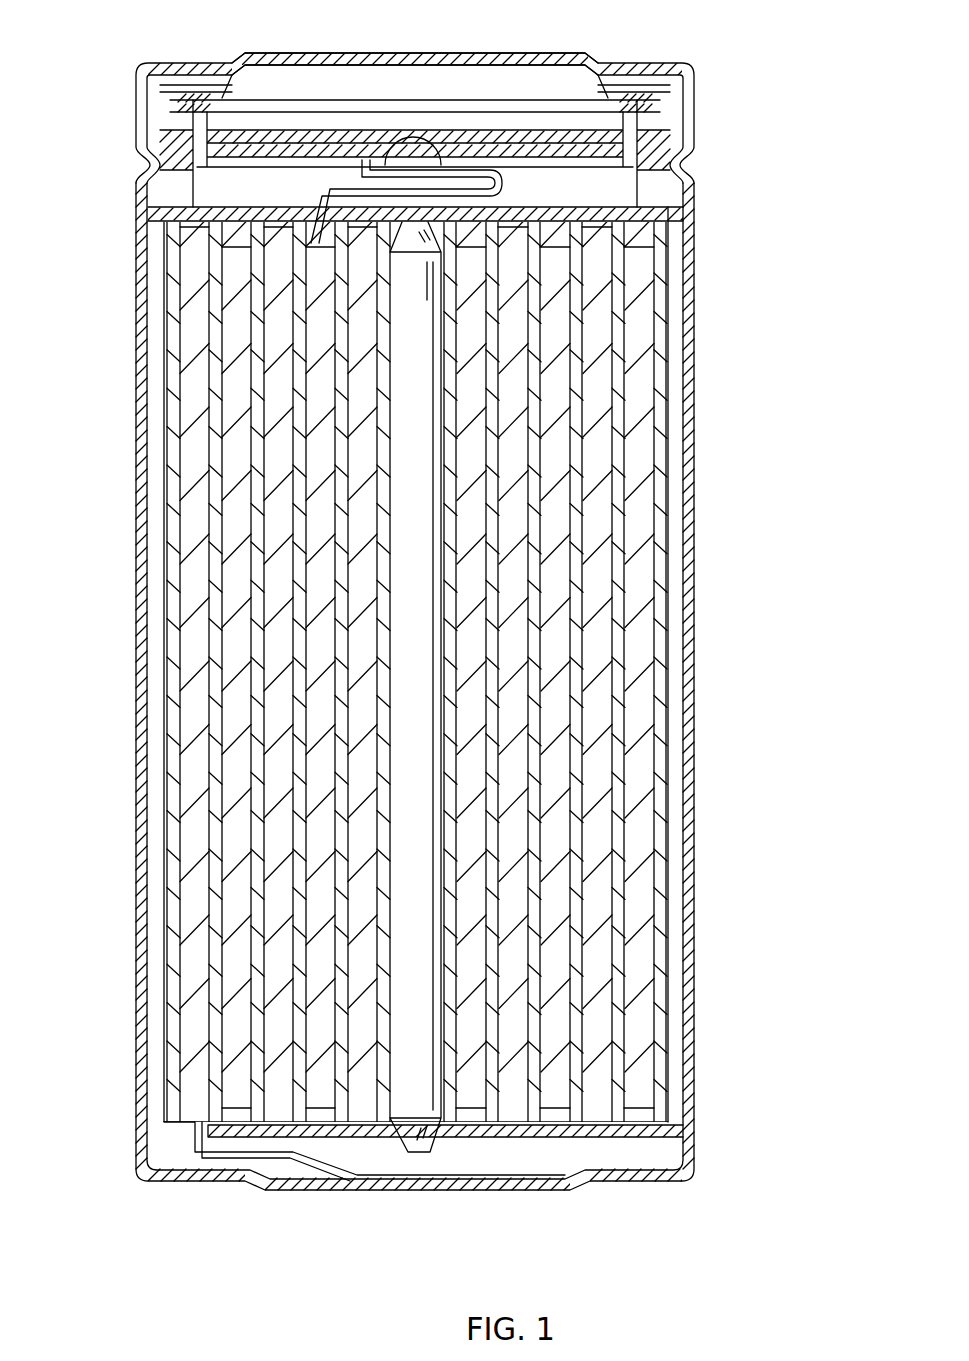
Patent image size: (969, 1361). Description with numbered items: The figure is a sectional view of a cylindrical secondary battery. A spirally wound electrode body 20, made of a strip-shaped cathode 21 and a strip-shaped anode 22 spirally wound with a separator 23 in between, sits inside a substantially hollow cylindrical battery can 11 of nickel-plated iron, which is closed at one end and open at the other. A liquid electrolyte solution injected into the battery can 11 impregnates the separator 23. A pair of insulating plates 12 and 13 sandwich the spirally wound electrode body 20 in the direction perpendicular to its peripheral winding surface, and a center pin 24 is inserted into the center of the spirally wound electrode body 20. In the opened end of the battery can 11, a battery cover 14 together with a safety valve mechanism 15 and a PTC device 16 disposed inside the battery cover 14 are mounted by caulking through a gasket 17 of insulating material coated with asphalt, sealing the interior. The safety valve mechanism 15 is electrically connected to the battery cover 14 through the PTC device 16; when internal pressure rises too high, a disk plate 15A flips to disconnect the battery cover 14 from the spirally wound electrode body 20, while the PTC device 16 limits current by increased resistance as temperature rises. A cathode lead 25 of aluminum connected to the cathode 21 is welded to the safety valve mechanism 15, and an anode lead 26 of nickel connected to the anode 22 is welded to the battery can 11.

The battery can 11 is at (684, 278).
The insulating plate 12 is at (672, 215).
The insulating plate 13 is at (672, 1128).
The battery cover 14 is at (375, 52).
The safety valve mechanism 15 is at (556, 121).
The disk plate 15A is at (500, 128).
The PTC device 16 is at (668, 110).
The gasket 17 is at (670, 177).
The spirally wound electrode body 20 is at (461, 664).
The cathode 21 is at (598, 498).
The anode 22 is at (634, 565).
The separator 23 is at (614, 640).
The center pin 24 is at (412, 690).
The cathode lead 25 is at (392, 134).
The anode lead 26 is at (307, 1168).